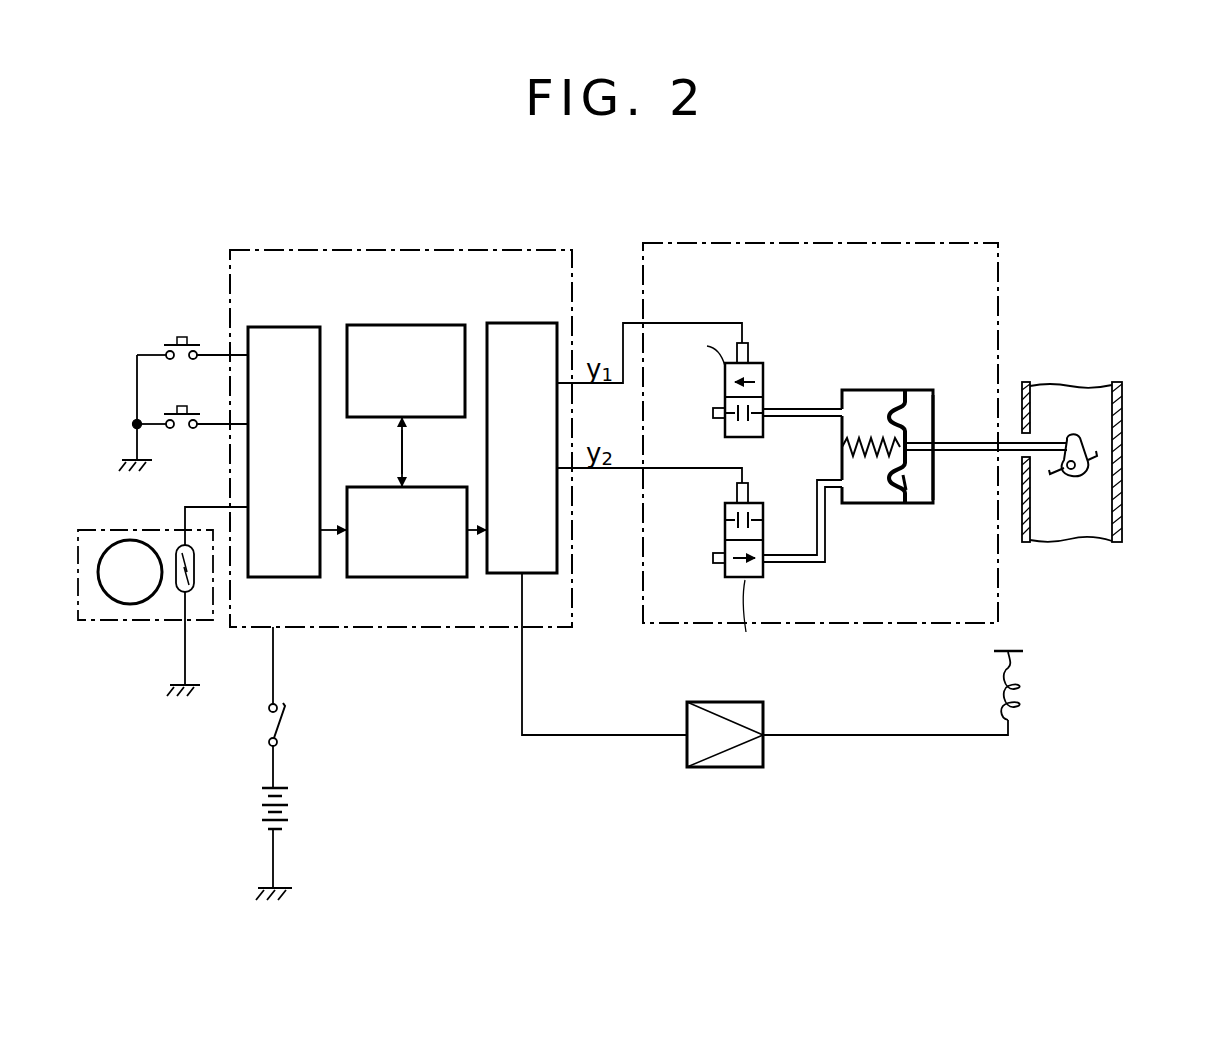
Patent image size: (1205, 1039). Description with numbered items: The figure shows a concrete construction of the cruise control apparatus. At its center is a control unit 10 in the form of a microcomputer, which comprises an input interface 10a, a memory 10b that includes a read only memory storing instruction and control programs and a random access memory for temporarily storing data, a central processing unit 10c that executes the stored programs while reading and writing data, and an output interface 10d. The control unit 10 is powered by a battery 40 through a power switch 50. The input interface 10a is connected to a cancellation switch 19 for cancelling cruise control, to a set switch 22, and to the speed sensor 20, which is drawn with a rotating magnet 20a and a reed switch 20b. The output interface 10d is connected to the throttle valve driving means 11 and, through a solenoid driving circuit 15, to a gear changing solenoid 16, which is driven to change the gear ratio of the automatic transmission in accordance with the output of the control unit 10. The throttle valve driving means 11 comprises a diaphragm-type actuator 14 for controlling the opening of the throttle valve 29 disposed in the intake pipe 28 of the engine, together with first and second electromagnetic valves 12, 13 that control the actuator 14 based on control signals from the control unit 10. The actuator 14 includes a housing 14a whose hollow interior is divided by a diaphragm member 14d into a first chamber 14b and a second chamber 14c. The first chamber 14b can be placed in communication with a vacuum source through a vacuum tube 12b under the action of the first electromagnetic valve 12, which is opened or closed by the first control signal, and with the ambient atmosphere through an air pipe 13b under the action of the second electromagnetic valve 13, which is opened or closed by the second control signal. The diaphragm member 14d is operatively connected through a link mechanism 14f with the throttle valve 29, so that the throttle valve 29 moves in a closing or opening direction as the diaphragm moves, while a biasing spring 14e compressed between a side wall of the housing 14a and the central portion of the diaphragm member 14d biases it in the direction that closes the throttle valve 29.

The control unit 10 is at (428, 250).
The input interface 10a is at (290, 327).
The memory 10b is at (380, 325).
The central processing unit 10c is at (405, 577).
The output interface 10d is at (509, 323).
The throttle valve driving means 11 is at (870, 243).
The first electromagnetic valve 12 is at (762, 362).
The vacuum tube 12b is at (788, 432).
The second electromagnetic valve 13 is at (718, 580).
The air pipe 13b is at (805, 566).
The diaphragm-type actuator 14 is at (906, 388).
The housing 14a is at (926, 392).
The first chamber 14b is at (850, 390).
The second chamber 14c is at (911, 505).
The diaphragm member 14d is at (915, 487).
The biasing spring 14e is at (855, 505).
The link mechanism 14f is at (966, 456).
The solenoid driving circuit 15 is at (765, 767).
The gear changing solenoid 16 is at (1020, 709).
The cancellation switch 19 is at (168, 418).
The speed sensor 20 is at (93, 624).
The magnet 20a is at (117, 541).
The reed switch 20b is at (180, 595).
The set switch 22 is at (167, 343).
The intake pipe 28 is at (1085, 396).
The throttle valve 29 is at (1092, 462).
The battery 40 is at (295, 812).
The power switch 50 is at (283, 718).